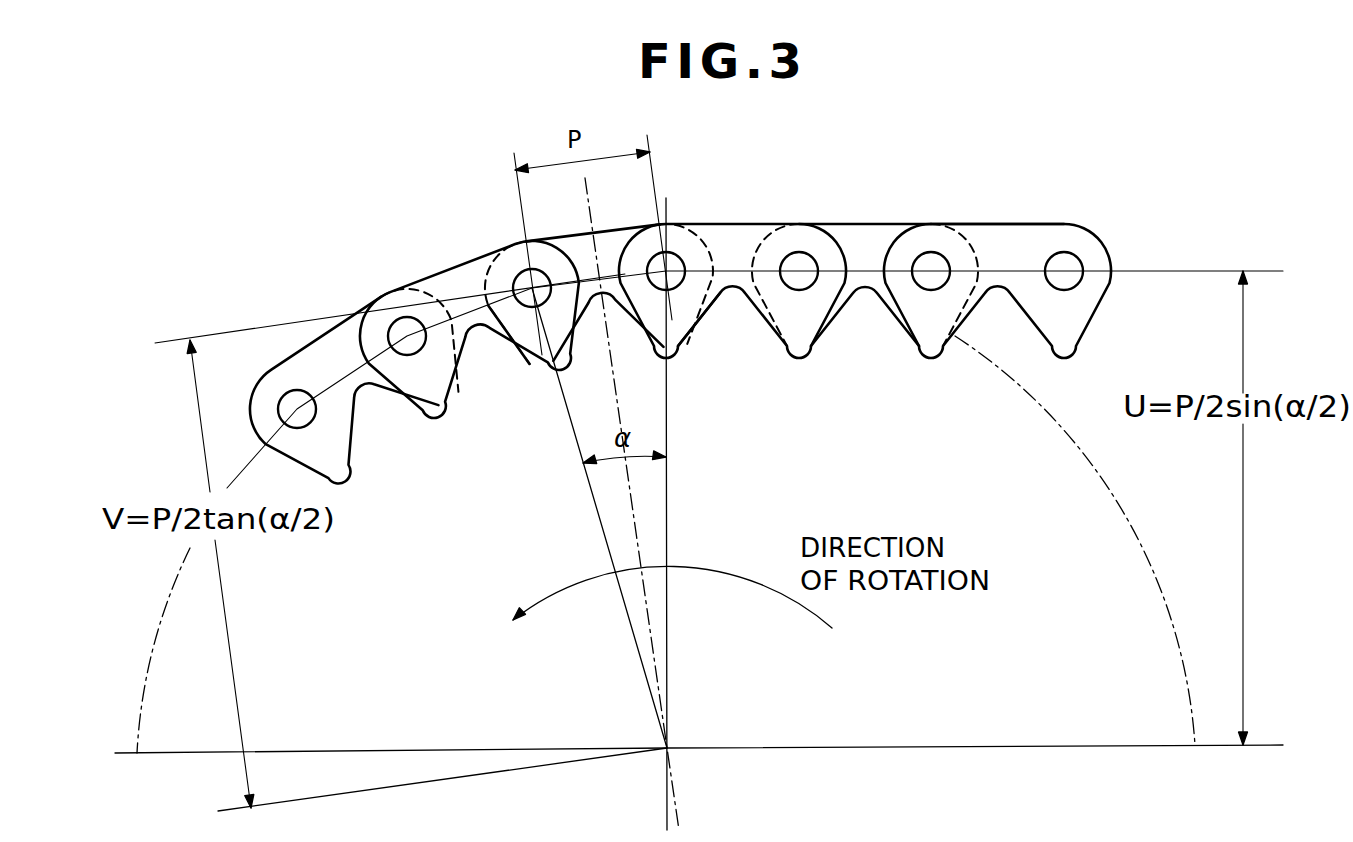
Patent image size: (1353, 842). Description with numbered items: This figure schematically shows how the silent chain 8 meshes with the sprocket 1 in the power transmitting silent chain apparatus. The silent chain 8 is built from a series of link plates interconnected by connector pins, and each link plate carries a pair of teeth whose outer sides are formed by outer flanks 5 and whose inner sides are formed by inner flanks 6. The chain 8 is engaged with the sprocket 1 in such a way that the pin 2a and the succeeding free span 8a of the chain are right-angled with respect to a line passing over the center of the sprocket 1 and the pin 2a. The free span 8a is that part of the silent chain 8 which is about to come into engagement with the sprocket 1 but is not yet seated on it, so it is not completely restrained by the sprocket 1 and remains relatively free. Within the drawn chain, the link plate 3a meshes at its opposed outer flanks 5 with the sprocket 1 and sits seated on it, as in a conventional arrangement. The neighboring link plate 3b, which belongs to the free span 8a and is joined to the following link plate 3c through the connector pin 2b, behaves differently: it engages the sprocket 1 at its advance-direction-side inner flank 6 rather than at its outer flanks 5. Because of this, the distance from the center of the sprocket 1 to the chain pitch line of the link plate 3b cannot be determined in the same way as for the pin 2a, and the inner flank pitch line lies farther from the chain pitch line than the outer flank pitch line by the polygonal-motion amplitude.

The sprocket 1 is at (1160, 580).
The pin 2a is at (675, 260).
The connector pin 2b is at (803, 253).
The link plate 3a is at (577, 247).
The link plate 3b is at (742, 247).
The link plate 3c is at (870, 237).
The outer flank 5 is at (507, 357).
The inner flank 6 is at (766, 330).
The silent chain 8 is at (1073, 210).
The free span of the chain 8a is at (962, 222).